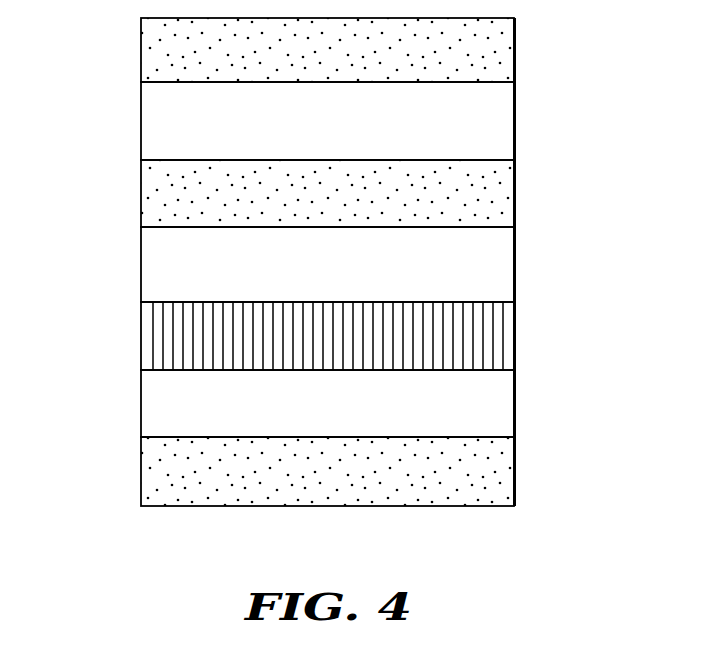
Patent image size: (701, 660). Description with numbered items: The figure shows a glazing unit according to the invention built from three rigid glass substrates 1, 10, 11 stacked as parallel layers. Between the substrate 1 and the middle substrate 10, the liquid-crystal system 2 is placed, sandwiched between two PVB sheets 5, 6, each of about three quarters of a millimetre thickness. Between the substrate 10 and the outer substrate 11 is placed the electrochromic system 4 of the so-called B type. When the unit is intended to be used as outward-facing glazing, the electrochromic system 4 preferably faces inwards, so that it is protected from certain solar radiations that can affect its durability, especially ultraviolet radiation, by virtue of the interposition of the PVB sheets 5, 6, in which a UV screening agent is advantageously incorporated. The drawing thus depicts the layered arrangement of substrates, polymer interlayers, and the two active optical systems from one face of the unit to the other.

The glass substrate 1 is at (150, 472).
The liquid-crystal system 2 is at (152, 330).
The electrochromic system of "B" type 4 is at (150, 127).
The PVB sheet 5 is at (150, 403).
The PVB sheet 6 is at (150, 263).
The glass substrate 10 is at (150, 194).
The glass substrate 11 is at (150, 56).